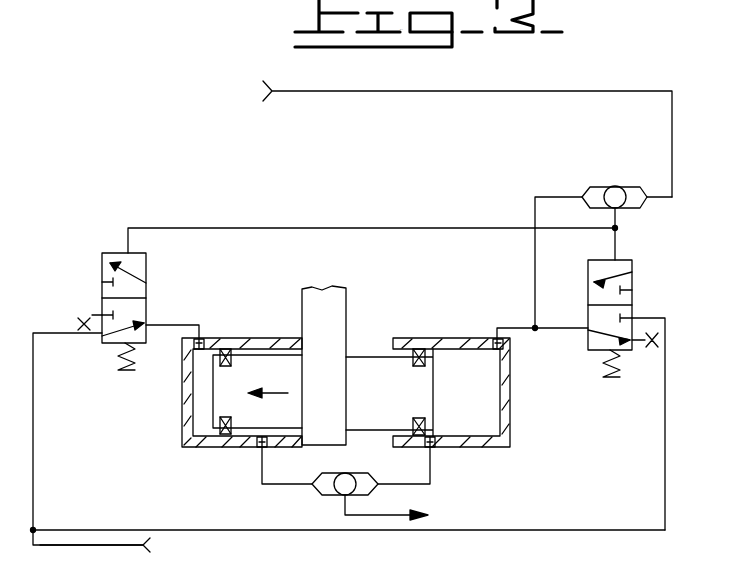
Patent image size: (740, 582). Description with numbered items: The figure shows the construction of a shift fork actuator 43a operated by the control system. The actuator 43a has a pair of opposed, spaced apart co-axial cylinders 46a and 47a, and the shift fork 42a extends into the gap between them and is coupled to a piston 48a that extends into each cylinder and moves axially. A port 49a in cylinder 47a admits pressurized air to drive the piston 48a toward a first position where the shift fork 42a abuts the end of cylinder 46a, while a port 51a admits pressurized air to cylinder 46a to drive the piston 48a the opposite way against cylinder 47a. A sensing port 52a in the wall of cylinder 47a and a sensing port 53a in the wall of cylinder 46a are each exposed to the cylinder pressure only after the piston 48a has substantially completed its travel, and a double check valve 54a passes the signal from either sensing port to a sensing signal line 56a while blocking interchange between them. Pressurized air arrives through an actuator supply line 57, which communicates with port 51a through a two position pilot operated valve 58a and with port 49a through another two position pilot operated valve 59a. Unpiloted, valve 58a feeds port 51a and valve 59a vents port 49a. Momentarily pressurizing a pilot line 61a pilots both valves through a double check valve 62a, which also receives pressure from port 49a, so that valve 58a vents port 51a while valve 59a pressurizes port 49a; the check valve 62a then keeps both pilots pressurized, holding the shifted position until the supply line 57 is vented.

The shift fork 42a is at (348, 318).
The shift fork actuator 43a is at (520, 474).
The cylinder 46a is at (265, 338).
The cylinder 47a is at (447, 338).
The piston 48a is at (400, 407).
The port 49a is at (496, 352).
The port 51a is at (199, 340).
The sensing port 52a is at (428, 449).
The sensing port 53a is at (260, 448).
The double check valve 54a is at (328, 496).
The sensing signal line 56a is at (380, 513).
The actuator supply line 57 is at (103, 545).
The two position pilot operated valve 58a is at (122, 252).
The two position pilot operated valve 59a is at (633, 260).
The pilot line 61a is at (497, 92).
The double check valve 62a is at (597, 187).